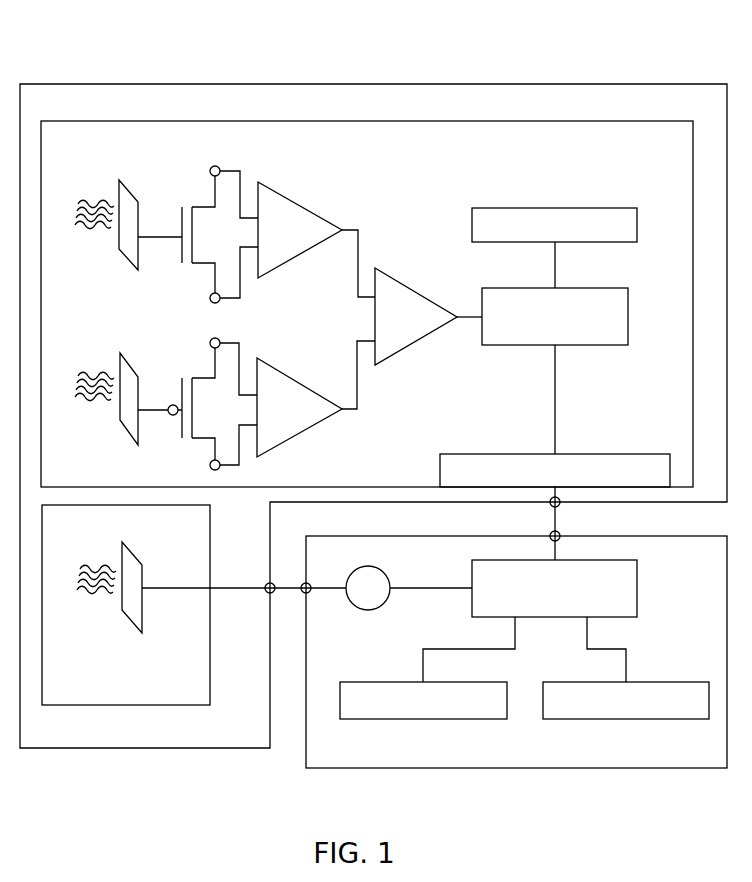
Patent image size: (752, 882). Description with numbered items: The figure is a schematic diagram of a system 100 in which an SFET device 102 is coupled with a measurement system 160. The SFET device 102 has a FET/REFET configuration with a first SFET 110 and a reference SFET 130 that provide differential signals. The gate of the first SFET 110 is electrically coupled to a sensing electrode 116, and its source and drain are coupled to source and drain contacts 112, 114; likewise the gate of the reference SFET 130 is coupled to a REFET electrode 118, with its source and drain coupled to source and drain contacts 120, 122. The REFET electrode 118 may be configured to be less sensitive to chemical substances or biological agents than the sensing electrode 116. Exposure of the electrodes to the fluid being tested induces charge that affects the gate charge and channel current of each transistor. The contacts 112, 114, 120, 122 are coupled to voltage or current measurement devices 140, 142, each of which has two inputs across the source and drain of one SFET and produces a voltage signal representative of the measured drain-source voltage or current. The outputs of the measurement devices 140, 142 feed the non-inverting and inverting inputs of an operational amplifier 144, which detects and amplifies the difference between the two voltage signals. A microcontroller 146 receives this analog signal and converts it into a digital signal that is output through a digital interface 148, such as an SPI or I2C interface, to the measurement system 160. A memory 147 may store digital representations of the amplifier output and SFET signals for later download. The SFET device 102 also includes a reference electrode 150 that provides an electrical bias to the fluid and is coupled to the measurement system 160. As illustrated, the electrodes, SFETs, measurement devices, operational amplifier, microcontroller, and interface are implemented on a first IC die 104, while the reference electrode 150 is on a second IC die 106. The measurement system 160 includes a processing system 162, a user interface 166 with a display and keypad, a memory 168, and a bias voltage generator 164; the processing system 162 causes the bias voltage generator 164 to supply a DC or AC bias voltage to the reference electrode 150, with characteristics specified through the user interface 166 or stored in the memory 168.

The system 100 is at (617, 45).
The SFET device 102 is at (102, 83).
The first IC die 104 is at (155, 121).
The second IC die 106 is at (117, 705).
The first SFET 110 is at (112, 180).
The source contact 112 is at (211, 167).
The drain contact 114 is at (211, 294).
The sensing electrode 116 is at (126, 245).
The REFET electrode 118 is at (125, 418).
The source contact 120 is at (210, 340).
The drain contact 122 is at (210, 461).
The reference SFET 130 is at (112, 353).
The measurement device 140 is at (300, 203).
The measurement device 142 is at (293, 375).
The operational amplifier 144 is at (427, 290).
The microcontroller 146 is at (628, 317).
The memory 147 is at (573, 205).
The digital interface 148 is at (650, 453).
The reference electrode 150 is at (127, 607).
The measurement system 160 is at (306, 754).
The processing system 162 is at (638, 590).
The bias voltage generator 164 is at (384, 605).
The user interface 166 is at (630, 719).
The memory 168 is at (442, 719).